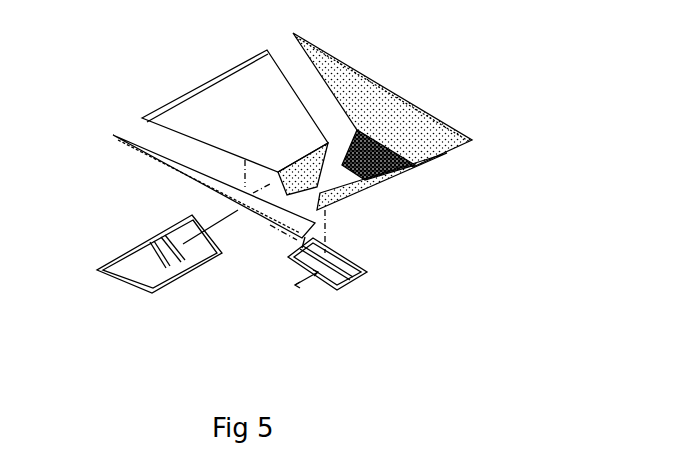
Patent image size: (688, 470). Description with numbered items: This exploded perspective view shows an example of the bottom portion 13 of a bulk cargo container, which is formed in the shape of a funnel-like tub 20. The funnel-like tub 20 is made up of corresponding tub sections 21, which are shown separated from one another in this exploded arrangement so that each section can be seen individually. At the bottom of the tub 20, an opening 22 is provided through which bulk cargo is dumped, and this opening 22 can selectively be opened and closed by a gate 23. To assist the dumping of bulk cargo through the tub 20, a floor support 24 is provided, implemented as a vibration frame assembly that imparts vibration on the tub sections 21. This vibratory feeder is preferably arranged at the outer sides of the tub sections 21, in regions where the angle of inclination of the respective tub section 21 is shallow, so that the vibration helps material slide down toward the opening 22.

The funnel-like tub 20 is at (303, 143).
The tub sections 21 is at (218, 100).
The opening 22 is at (322, 193).
The bottom portion 13 is at (430, 233).
The gate 23 is at (328, 283).
The floor support 24 is at (142, 282).